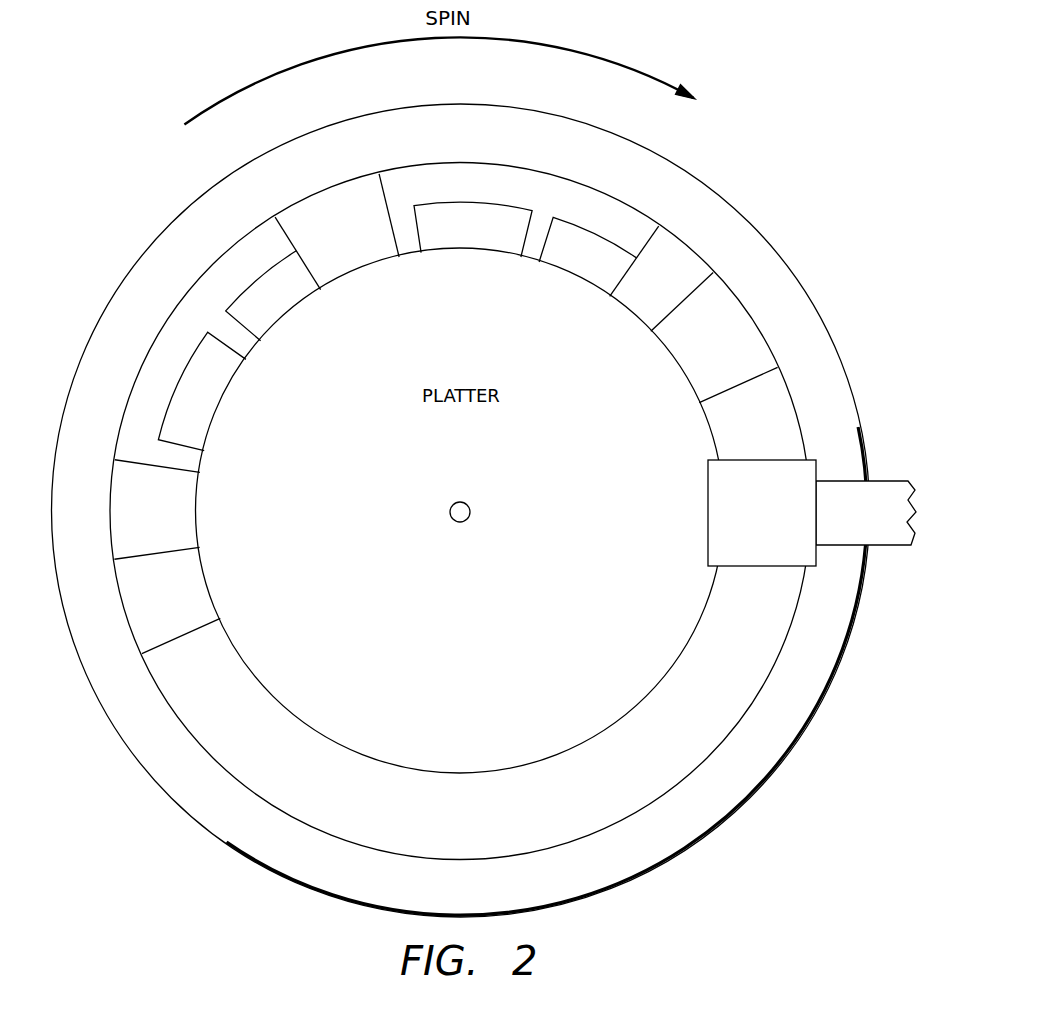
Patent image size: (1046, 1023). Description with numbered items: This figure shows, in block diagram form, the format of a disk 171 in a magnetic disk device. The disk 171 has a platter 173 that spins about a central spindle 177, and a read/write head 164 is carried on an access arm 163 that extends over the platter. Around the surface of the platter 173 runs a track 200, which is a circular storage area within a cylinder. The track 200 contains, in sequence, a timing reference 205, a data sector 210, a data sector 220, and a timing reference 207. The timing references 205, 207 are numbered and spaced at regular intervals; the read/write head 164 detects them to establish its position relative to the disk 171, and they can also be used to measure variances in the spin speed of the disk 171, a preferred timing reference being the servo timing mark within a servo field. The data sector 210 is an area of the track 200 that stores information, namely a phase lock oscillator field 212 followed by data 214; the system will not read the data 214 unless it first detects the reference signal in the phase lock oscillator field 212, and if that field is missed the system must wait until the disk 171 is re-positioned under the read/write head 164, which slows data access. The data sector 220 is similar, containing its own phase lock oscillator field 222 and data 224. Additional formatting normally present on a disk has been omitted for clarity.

The access arm 163 is at (890, 480).
The read/write head 164 is at (707, 515).
The disk 171 is at (138, 258).
The platter 173 is at (365, 130).
The spindle 177 is at (452, 503).
The track 200 is at (697, 626).
The timing reference 205 is at (674, 364).
The timing reference 207 is at (207, 575).
The data sector 210 is at (513, 163).
The phase lock oscillator field 212 is at (572, 270).
The data 214 is at (468, 250).
The data sector 220 is at (170, 310).
The phase lock oscillator field 222 is at (292, 310).
The data 224 is at (216, 424).